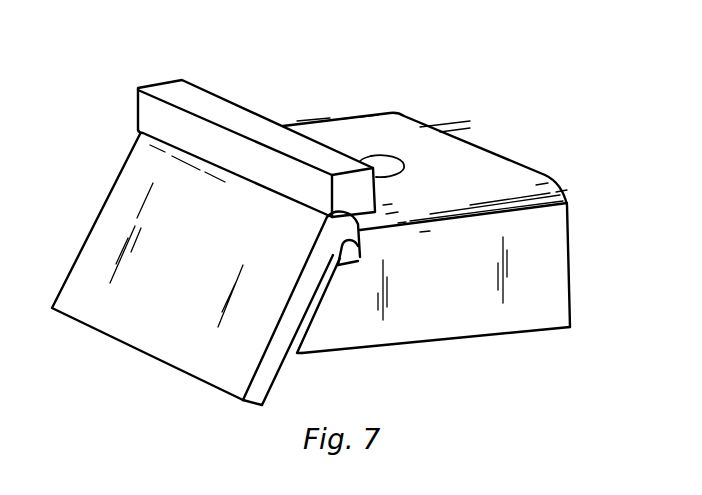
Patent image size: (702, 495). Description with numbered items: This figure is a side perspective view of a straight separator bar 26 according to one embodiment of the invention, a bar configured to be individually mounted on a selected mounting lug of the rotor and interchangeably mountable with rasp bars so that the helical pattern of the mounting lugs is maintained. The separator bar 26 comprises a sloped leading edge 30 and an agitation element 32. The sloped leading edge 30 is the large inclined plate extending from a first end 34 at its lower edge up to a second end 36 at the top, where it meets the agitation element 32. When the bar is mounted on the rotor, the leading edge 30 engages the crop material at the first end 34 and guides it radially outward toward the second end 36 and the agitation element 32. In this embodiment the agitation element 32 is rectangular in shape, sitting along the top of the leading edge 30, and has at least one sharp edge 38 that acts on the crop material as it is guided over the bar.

The straight separator bar 26 is at (484, 128).
The sloped leading edge 30 is at (110, 246).
The agitation element 32 is at (252, 104).
The first end 34 is at (172, 370).
The second end 36 is at (133, 131).
The sharp edge 38 is at (195, 110).